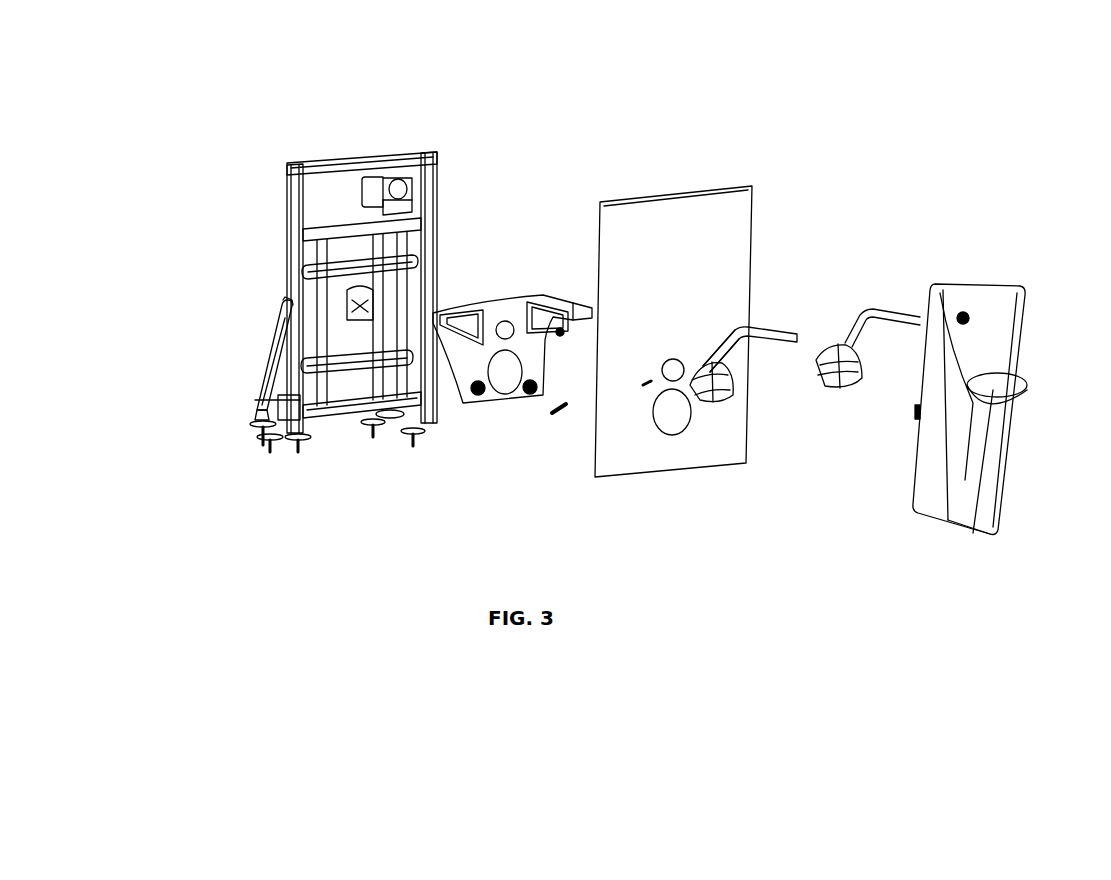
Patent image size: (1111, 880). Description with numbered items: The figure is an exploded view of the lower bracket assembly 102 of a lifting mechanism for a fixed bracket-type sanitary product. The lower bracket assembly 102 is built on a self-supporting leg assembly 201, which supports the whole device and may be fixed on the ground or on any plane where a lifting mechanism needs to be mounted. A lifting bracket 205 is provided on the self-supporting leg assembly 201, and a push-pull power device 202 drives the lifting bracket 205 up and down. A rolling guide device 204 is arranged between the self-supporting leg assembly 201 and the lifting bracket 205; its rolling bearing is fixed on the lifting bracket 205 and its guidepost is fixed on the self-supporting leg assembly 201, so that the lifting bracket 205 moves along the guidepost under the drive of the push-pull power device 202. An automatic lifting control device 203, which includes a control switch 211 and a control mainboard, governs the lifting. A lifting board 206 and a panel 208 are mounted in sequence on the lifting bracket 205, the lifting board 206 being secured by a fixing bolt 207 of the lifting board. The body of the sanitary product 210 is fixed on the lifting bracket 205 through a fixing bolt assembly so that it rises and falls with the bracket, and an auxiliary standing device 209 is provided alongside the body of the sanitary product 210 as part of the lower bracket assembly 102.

The lower bracket assembly 102 is at (300, 283).
The self-supporting leg assembly 201 is at (267, 378).
The push-pull power device 202 is at (398, 157).
The automatic lifting control device 203 is at (440, 150).
The rolling guide device 204 is at (397, 250).
The lifting bracket 205 is at (297, 380).
The lifting board 206 is at (482, 360).
The fixing bolt of lifting board 207 is at (553, 412).
The panel 208 is at (625, 233).
The auxiliary standing device 209 is at (868, 303).
The body of sanitary product 210 is at (963, 433).
The control switch 211 is at (785, 327).